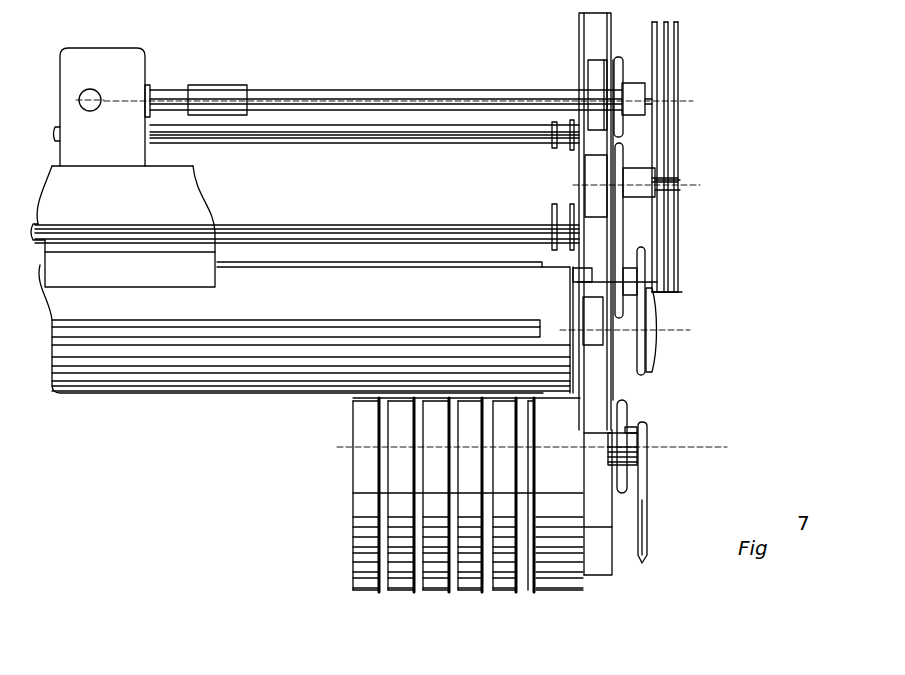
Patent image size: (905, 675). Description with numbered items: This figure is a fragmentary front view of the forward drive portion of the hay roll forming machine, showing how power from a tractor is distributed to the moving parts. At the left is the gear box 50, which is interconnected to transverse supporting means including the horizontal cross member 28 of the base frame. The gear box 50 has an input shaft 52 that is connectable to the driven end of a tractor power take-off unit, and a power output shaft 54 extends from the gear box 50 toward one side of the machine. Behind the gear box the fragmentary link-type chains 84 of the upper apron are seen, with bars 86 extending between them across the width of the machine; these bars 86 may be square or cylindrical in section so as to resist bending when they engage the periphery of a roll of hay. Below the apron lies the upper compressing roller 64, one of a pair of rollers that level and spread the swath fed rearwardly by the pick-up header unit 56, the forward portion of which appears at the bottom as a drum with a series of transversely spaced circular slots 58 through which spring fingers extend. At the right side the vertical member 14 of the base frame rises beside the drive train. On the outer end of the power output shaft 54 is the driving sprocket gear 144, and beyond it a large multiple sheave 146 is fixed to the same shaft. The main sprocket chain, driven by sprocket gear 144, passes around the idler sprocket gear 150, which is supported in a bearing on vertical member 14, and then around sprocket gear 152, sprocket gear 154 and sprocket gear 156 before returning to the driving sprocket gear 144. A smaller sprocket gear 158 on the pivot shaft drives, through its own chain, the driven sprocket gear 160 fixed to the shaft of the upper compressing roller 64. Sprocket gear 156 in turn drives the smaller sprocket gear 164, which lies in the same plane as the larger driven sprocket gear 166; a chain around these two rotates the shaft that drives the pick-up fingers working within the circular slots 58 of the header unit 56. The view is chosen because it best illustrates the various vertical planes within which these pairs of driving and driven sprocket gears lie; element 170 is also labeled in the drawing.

The vertical member 14 is at (597, 32).
The horizontal cross member 28 is at (172, 183).
The gear box 50 is at (88, 62).
The input shaft 52 is at (102, 98).
The power output shaft 54 is at (330, 92).
The pick-up header unit 56 is at (367, 507).
The circular slots 58 is at (385, 428).
The upper compressing roller 64 is at (240, 372).
The link-type chains 84 is at (553, 212).
The bars 86 is at (427, 125).
The sprocket gear 144 is at (627, 65).
The large multiple sheave 146 is at (680, 92).
The idler sprocket gear 150 is at (622, 162).
The sprocket gear 152 is at (625, 247).
The sprocket gear 154 is at (632, 407).
The sprocket gear 156 is at (648, 424).
The sprocket gear 158 is at (643, 258).
The driven sprocket gear 160 is at (657, 350).
The smaller sprocket gear 164 is at (650, 432).
The larger driven sprocket gear 166 is at (647, 540).
The frame end 170 is at (682, 292).